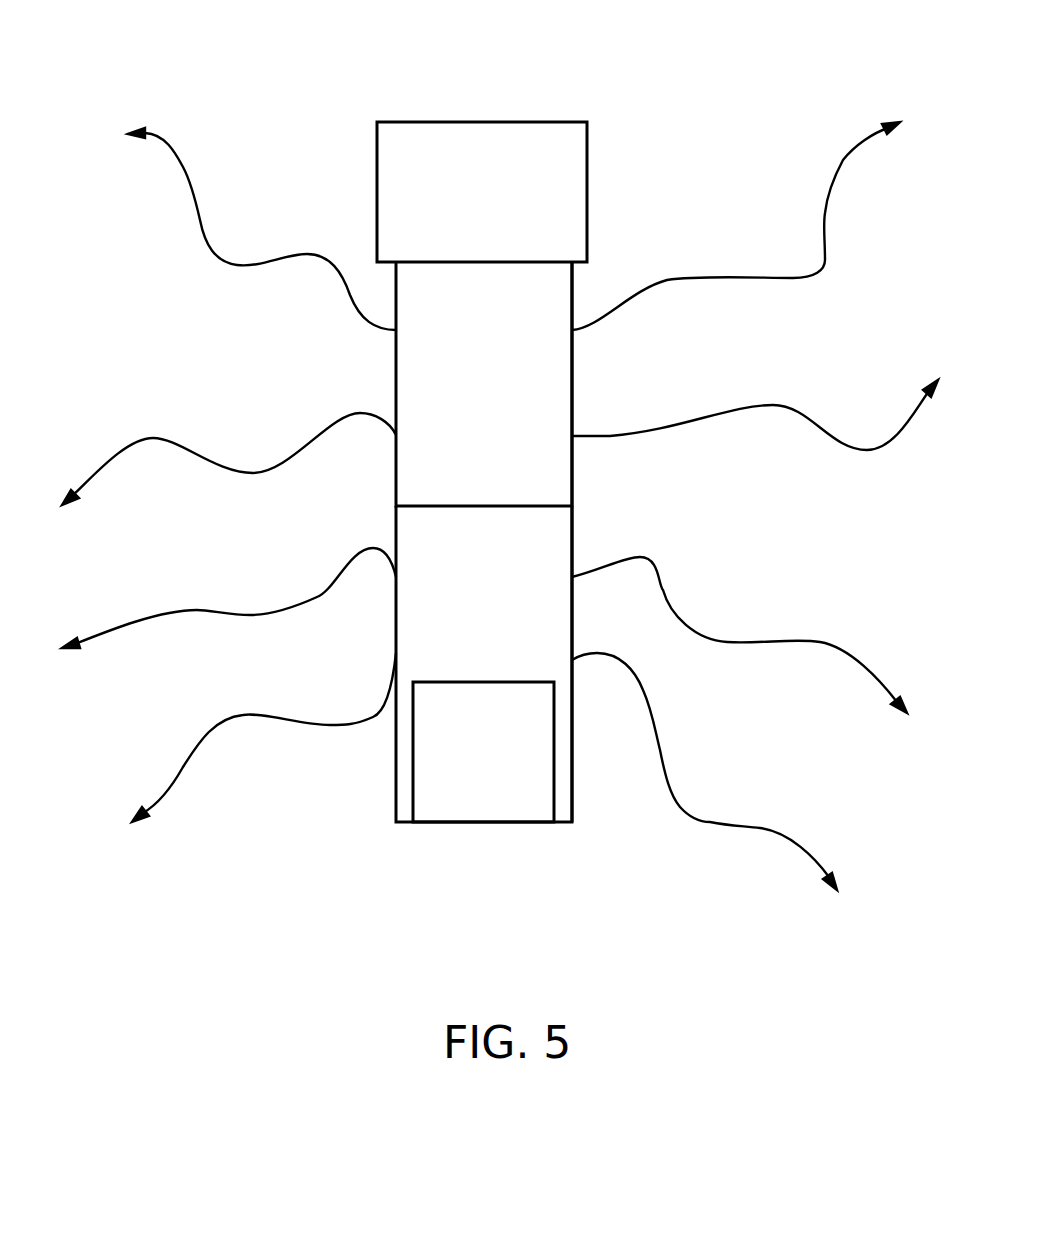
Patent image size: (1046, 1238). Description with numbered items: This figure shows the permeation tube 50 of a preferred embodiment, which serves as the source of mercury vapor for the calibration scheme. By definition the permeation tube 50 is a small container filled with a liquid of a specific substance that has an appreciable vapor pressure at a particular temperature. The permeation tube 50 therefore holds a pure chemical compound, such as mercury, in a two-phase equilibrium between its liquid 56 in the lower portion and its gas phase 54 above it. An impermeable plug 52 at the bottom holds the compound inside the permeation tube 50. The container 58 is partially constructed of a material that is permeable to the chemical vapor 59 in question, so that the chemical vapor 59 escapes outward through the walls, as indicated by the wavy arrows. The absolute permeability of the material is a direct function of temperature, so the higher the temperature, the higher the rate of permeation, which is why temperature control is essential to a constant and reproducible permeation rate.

The permeation tube 50 is at (551, 85).
The impermeable plug 52 is at (467, 787).
The gas phase 54 is at (447, 400).
The liquid 56 is at (518, 577).
The container 58 is at (572, 392).
The chemical vapor 59 is at (200, 235).